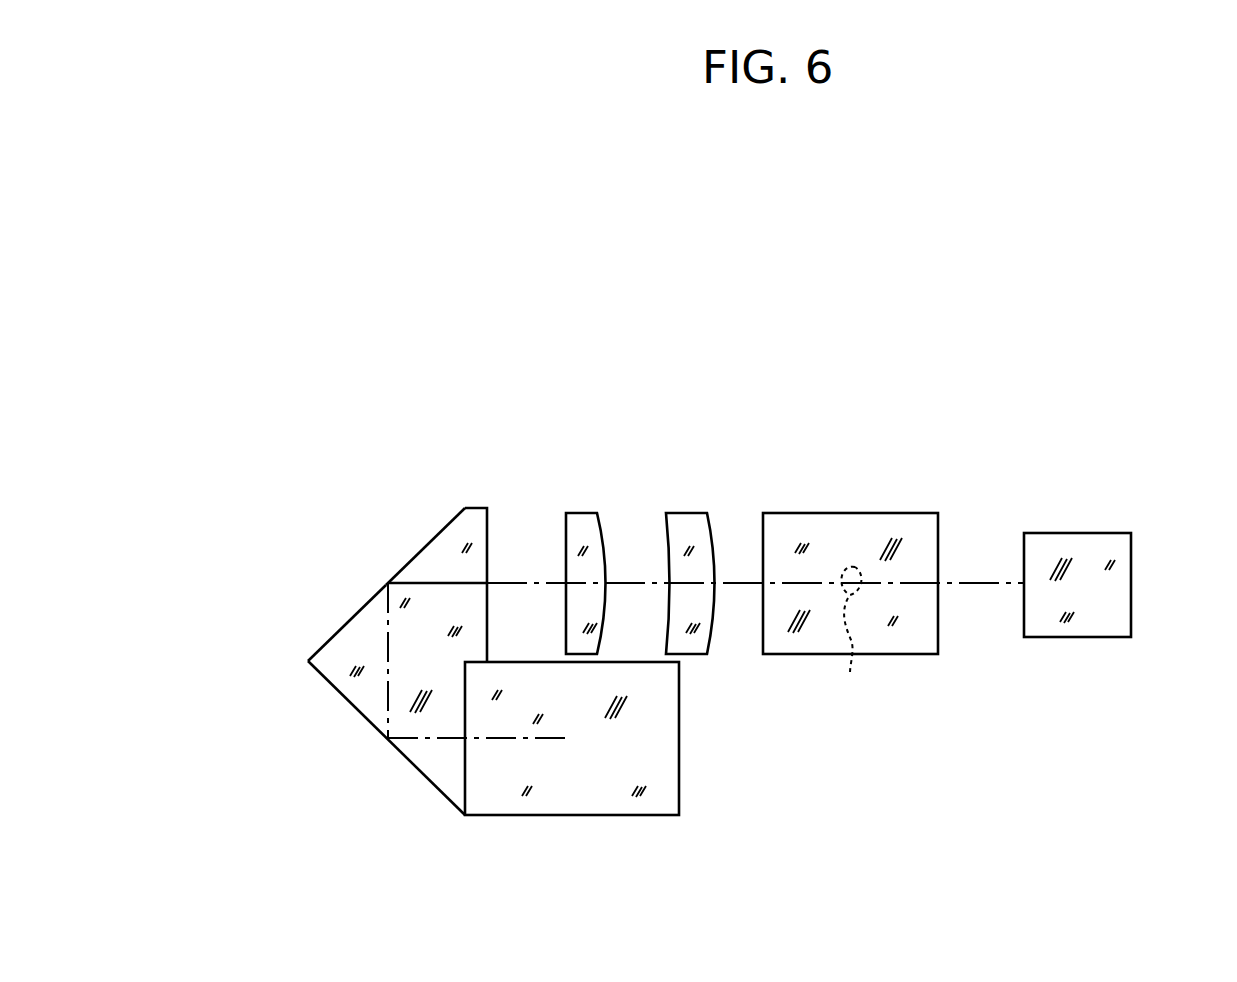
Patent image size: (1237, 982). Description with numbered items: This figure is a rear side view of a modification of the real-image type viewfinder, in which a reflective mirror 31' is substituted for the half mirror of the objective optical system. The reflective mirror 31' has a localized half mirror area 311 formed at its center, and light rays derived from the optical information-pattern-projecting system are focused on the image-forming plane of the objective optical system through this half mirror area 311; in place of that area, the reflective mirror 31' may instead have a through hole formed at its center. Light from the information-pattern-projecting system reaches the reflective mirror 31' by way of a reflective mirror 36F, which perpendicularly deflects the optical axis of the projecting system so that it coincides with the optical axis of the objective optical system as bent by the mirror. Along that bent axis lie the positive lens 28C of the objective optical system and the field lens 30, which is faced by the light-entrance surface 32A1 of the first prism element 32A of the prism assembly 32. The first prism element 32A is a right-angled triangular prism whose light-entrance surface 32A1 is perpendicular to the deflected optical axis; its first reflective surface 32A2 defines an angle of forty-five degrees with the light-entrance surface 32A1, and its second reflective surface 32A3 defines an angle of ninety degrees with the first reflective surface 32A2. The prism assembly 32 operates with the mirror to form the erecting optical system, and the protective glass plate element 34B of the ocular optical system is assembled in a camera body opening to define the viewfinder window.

The prism assembly 32 is at (352, 732).
The first prism element 32A is at (442, 560).
The light-entrance surface 32A1 is at (488, 548).
The first reflective surface 32A2 is at (340, 622).
The second reflective surface 32A3 is at (420, 784).
The field lens 30 is at (583, 532).
The positive lens 28C is at (688, 532).
The reflective mirror 31' is at (850, 557).
The half mirror area 311 is at (858, 649).
The protective glass plate element 34B is at (652, 737).
The reflective mirror 36F is at (1105, 582).